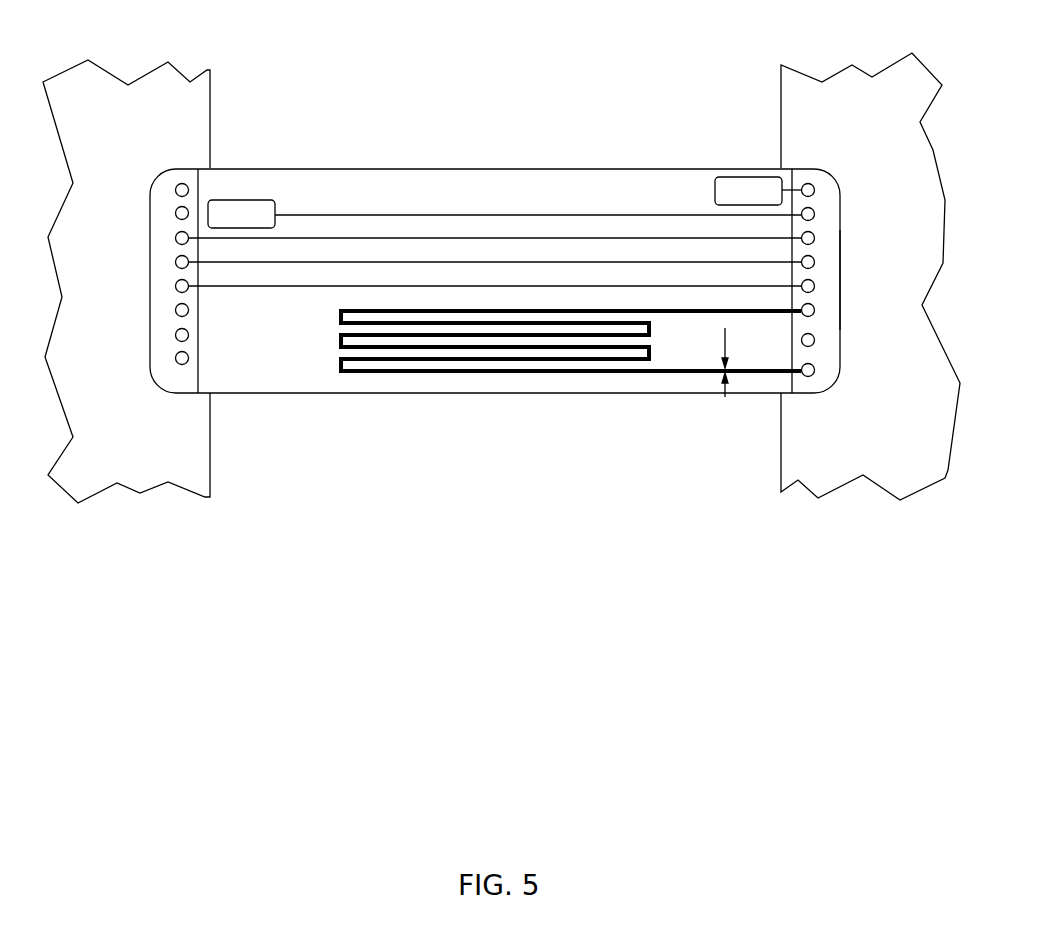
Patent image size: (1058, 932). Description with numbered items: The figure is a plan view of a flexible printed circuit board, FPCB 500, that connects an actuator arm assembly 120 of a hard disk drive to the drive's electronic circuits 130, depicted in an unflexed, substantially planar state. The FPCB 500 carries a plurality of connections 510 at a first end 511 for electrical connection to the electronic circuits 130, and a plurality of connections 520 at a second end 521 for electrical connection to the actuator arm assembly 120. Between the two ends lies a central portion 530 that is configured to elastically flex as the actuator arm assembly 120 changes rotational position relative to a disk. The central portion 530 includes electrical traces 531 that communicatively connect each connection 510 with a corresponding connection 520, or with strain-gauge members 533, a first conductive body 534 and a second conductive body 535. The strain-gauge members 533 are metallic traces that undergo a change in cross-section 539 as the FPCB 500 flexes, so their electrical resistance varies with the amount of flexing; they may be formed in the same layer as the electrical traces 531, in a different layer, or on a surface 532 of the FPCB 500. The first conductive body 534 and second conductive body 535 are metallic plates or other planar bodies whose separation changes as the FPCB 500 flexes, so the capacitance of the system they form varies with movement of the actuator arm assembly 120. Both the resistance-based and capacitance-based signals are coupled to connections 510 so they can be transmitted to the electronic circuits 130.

The flexible printed circuit board (FPCB) 500 is at (357, 50).
The actuator arm assembly 120 is at (156, 121).
The electronic circuits 130 is at (891, 116).
The connections 510 is at (815, 238).
The first end 511 is at (843, 282).
The connections 520 is at (175, 238).
The second end 521 is at (150, 286).
The central portion 530 is at (699, 453).
The electrical traces 531 is at (373, 215).
The surface 532 is at (277, 363).
The strain-gauge members 533 is at (378, 308).
The first conductive body 534 is at (243, 200).
The second conductive body 535 is at (748, 175).
The cross-section 539 is at (729, 386).